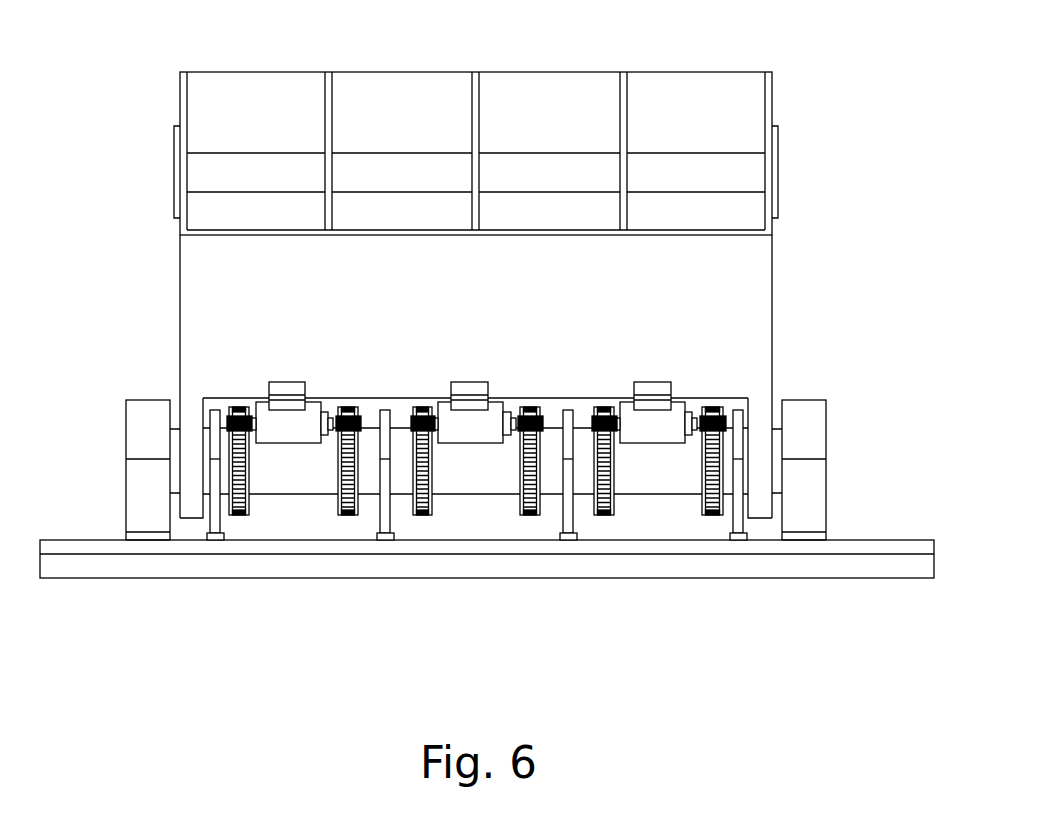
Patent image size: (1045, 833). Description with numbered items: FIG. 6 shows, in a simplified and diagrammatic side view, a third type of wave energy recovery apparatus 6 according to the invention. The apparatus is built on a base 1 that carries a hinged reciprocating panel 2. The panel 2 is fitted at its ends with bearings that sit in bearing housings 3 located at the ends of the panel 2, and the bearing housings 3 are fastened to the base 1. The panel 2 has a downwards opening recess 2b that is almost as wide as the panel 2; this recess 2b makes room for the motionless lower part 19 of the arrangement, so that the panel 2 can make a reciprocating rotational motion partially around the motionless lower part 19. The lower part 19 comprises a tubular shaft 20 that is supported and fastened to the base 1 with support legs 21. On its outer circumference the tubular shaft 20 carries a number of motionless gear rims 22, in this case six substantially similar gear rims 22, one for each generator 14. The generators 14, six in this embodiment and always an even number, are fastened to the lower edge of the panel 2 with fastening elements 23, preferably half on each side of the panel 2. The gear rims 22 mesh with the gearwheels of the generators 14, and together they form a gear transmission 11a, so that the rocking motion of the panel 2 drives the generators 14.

The base 1 is at (870, 541).
The panel 2 is at (600, 78).
The recess 2b is at (392, 397).
The bearing housing 3 is at (133, 417).
The drive unit 6 is at (681, 359).
The gear transmission 11a is at (240, 532).
The generator 14 is at (262, 404).
The motionless lower part 19 is at (481, 531).
The tubular shaft 20 is at (681, 490).
The support leg 21 is at (568, 410).
The gear rim 22 is at (348, 516).
The fastening element 23 is at (288, 388).